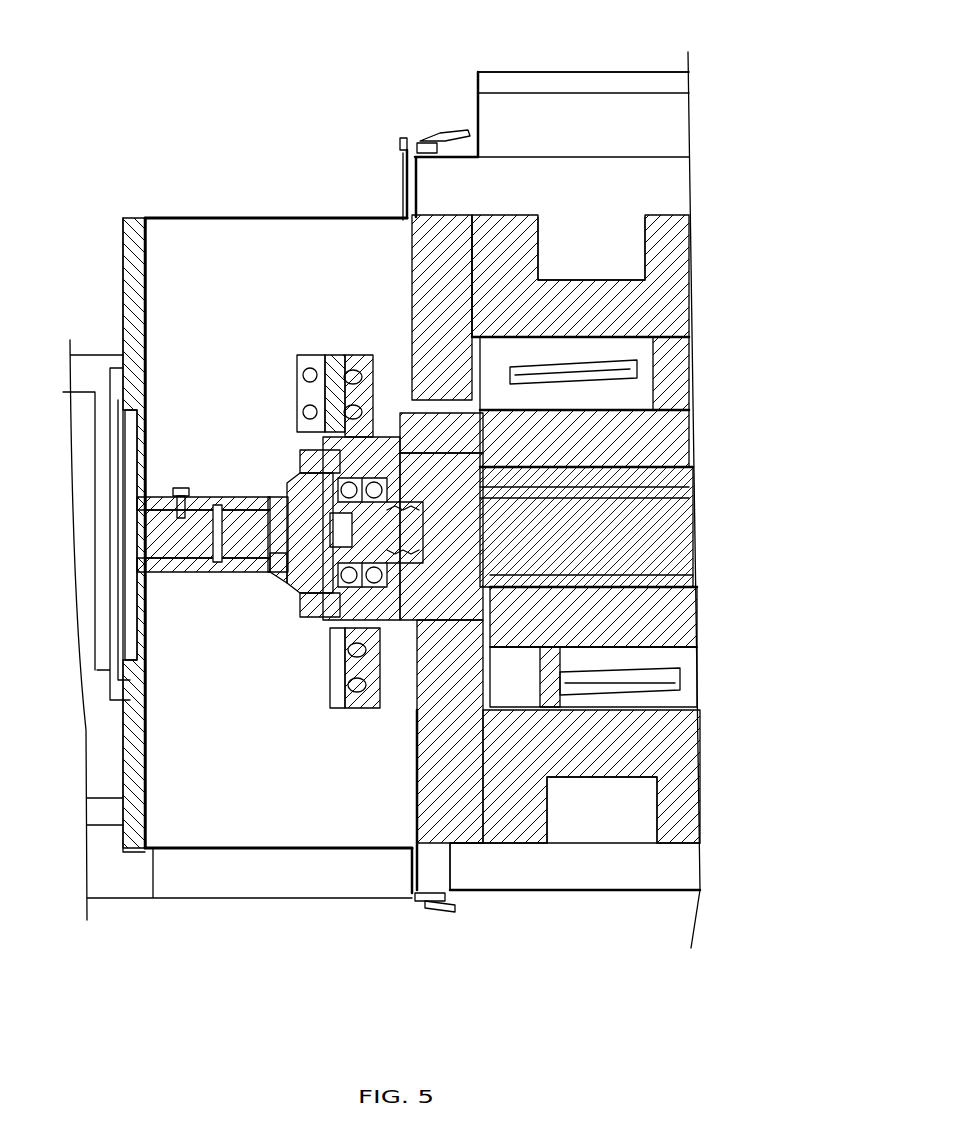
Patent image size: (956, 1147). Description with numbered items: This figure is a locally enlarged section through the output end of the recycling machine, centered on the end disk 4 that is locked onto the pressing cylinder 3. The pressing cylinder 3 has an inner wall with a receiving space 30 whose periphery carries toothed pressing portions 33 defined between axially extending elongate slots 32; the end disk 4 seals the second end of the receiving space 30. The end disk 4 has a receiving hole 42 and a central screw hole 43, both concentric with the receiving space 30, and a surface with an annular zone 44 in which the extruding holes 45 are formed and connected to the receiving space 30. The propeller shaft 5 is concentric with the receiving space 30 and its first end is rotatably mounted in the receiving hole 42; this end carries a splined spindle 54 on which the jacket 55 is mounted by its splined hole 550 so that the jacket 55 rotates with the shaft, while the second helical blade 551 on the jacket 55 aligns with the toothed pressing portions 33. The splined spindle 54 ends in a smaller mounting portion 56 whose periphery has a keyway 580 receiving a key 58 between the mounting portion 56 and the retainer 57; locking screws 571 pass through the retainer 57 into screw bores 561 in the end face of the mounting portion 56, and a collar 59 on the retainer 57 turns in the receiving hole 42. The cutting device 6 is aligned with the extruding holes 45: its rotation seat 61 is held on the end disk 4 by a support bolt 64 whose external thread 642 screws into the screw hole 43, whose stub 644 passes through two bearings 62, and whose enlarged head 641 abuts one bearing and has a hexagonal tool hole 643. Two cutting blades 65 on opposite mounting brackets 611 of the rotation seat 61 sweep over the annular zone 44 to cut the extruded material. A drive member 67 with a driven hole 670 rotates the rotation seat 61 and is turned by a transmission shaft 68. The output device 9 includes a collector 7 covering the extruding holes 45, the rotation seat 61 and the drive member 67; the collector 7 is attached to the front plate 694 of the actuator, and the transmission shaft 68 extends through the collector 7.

The output device 9 is at (219, 191).
The collector 7 is at (182, 285).
The front plate 694 is at (128, 240).
The pressing cylinder 3 is at (580, 277).
The receiving space 30 is at (491, 375).
The mounting portion 56 is at (469, 455).
The keyway 580 is at (450, 413).
The key 58 is at (465, 440).
The retainer 57 is at (445, 620).
The annular zone 44 is at (415, 707).
The mounting brackets 611 is at (357, 347).
The rotation seat 61 is at (323, 442).
The cutting blades 65 is at (343, 340).
The stub 644 is at (370, 355).
The external thread 642 is at (390, 440).
The screw hole 43 is at (393, 713).
The enlarged head 641 is at (330, 632).
The drive member 67 is at (298, 478).
The transmission shaft 68 is at (295, 600).
The driven hole 670 is at (295, 525).
The support bolt 64 is at (320, 532).
The hexagonal tool hole 643 is at (175, 505).
The bearings 62 is at (330, 650).
The cutting device 6 is at (283, 606).
The propeller shaft 5 is at (706, 517).
The receiving hole 42 is at (490, 483).
The screw bores 561 is at (487, 498).
The locking screws 571 is at (523, 578).
The splined hole 550 is at (665, 605).
The splined spindle 54 is at (657, 648).
The collar 59 is at (485, 613).
The jacket 55 is at (600, 663).
The second helical blade 551 is at (580, 687).
The elongate slots 32 is at (660, 752).
The toothed pressing portions 33 is at (583, 773).
The end disk 4 is at (433, 899).
The extruding holes 45 is at (468, 845).